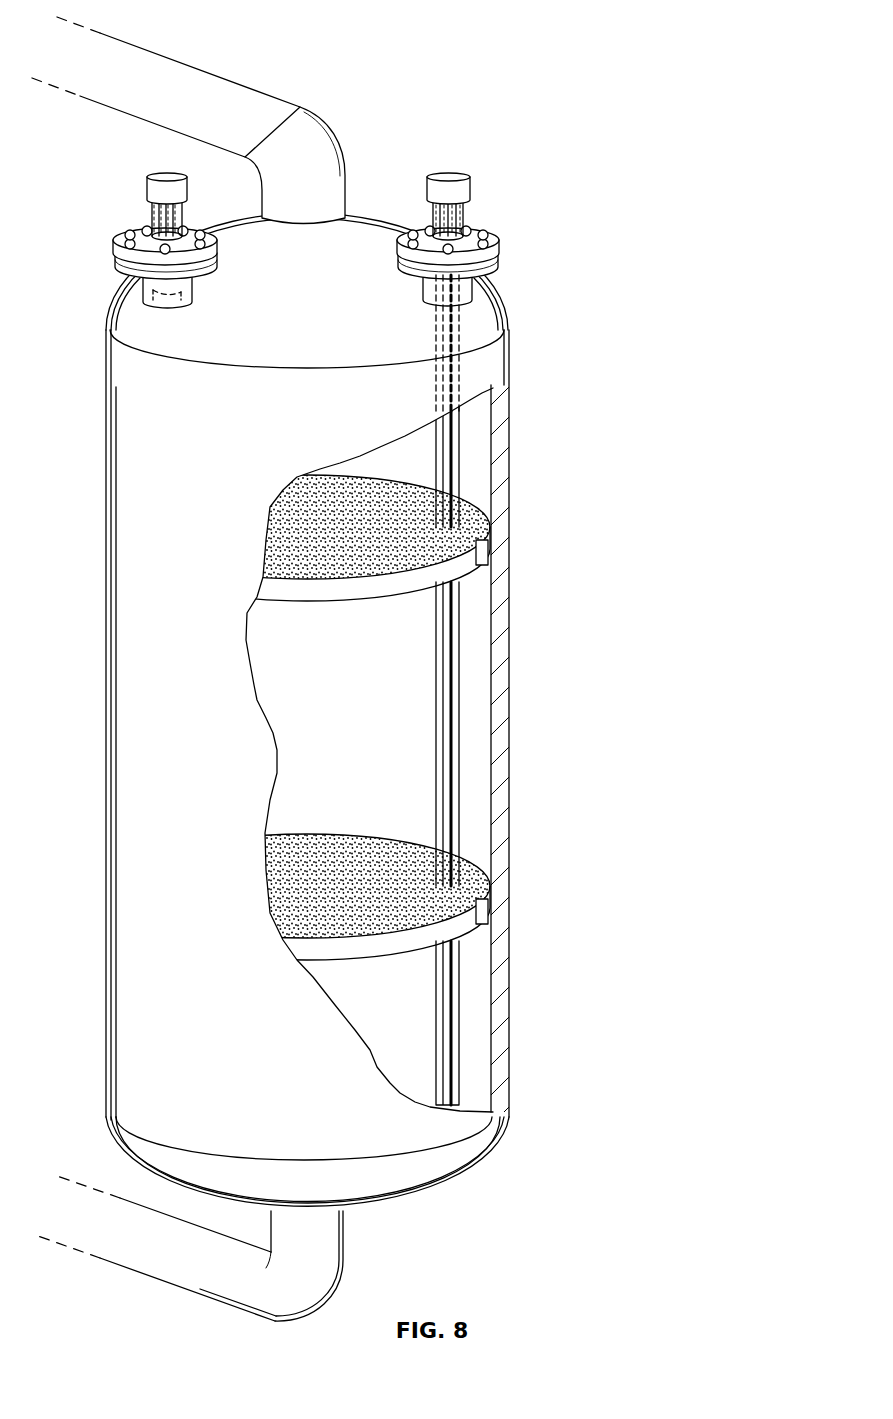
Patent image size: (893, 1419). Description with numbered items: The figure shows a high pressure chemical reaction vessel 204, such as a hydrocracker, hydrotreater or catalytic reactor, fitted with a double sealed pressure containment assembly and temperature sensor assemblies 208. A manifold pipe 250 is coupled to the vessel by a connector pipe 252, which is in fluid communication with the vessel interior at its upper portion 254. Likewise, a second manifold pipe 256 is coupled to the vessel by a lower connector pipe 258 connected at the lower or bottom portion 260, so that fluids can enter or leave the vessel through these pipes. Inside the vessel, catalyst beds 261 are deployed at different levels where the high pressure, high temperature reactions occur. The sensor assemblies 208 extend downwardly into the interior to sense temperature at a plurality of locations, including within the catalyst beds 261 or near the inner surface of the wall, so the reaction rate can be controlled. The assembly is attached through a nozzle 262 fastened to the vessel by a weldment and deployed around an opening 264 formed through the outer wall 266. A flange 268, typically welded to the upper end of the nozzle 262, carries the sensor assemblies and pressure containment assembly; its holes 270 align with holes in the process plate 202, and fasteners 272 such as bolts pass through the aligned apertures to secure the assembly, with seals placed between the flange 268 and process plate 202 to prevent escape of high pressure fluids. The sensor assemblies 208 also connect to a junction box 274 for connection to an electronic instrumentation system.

The process plate 202 is at (118, 248).
The high pressure chemical reaction vessel 204 is at (104, 598).
The sensor assemblies 208 is at (442, 775).
The manifold pipe 250 is at (190, 78).
The connector pipe 252 is at (332, 190).
The upper portion 254 is at (286, 350).
The second manifold pipe 256 is at (158, 1263).
The lower connector pipe 258 is at (327, 1230).
The lower or bottom portion 260 is at (433, 1168).
The catalyst beds 261 is at (311, 541).
The nozzle 262 is at (150, 283).
The opening 264 is at (167, 300).
The outer wall 266 is at (508, 620).
The flange 268 is at (118, 255).
The holes 270 is at (190, 232).
The fasteners 272 is at (170, 250).
The junction box 274 is at (163, 176).